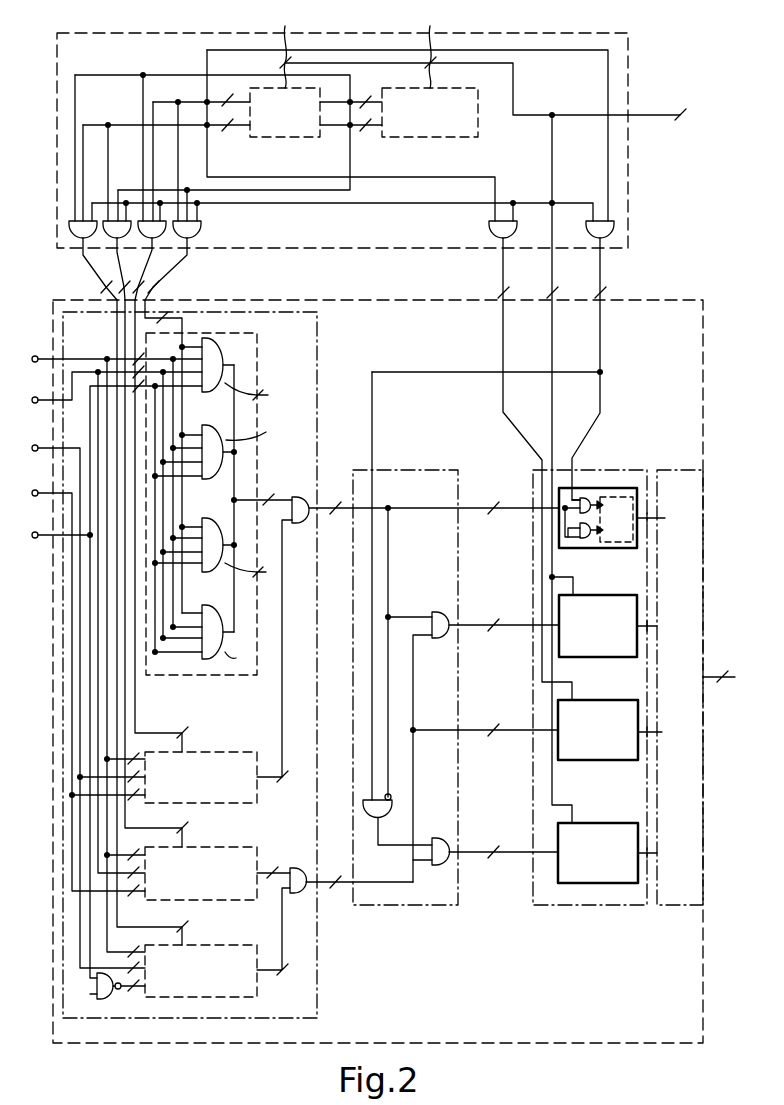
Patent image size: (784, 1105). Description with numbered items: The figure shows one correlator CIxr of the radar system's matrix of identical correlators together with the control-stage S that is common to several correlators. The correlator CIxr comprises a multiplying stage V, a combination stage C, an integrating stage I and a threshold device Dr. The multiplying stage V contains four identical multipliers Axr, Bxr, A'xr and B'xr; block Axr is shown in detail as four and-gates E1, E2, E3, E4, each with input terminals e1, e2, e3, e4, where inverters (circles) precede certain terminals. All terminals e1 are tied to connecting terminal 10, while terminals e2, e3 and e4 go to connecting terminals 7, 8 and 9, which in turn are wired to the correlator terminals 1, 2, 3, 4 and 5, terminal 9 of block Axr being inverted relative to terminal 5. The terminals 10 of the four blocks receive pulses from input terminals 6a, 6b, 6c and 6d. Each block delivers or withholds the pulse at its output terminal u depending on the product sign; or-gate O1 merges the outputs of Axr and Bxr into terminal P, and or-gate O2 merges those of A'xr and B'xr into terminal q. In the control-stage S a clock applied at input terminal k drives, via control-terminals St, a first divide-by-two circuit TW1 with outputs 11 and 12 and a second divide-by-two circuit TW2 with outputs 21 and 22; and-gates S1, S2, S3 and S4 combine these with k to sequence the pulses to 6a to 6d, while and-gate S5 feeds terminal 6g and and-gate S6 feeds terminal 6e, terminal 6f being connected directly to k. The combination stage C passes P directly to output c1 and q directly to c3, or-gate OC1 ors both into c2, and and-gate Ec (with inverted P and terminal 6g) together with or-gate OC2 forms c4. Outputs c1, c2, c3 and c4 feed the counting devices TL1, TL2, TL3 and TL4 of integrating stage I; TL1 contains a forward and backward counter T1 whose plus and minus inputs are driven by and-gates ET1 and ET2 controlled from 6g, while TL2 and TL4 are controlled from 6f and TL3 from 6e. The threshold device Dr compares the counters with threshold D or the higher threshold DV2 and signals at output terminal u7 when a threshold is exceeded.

The terminal 1 is at (35, 356).
The connecting terminal 2 is at (35, 397).
The connecting terminal 3 is at (35, 445).
The input terminal 4 is at (35, 490).
The input terminal 5 is at (35, 532).
The input terminal 6a is at (158, 288).
The input terminal 6b is at (142, 284).
The input terminal 6c is at (120, 284).
The input terminal 6d is at (101, 288).
The input terminal 6e is at (513, 292).
The input terminal 6f is at (558, 292).
The input terminal 6g is at (606, 292).
The connecting terminal 7 is at (135, 359).
The connecting terminal 8 is at (136, 968).
The connecting terminal 9 is at (116, 1000).
The connecting terminal 10 is at (170, 316).
The output terminal 11 is at (366, 131).
The output terminal 12 is at (366, 97).
The output terminal 21 is at (229, 131).
The output terminal 22 is at (229, 94).
The control-stage S is at (634, 50).
The and-gate S1 is at (202, 226).
The and-gate S2 is at (165, 240).
The and-gate S3 is at (122, 243).
The and-gate S4 is at (67, 243).
The and-gate S5 is at (614, 232).
The and-gate S6 is at (489, 230).
The control-terminal St is at (355, 45).
The input terminal k is at (681, 114).
The first synchronous divide-by-two circuit TW1 is at (450, 128).
The second synchronous divide-by-two circuit TW2 is at (305, 128).
The multiplying stage V is at (320, 372).
The multiplier Axr is at (217, 528).
The multiplier Bxr is at (233, 791).
The multiplier A'xr is at (201, 873).
The multiplier B'xr is at (201, 971).
The and-gate E1 is at (245, 375).
The and-gate E2 is at (245, 446).
The and-gate E3 is at (244, 547).
The and-gate E4 is at (228, 636).
The input terminal e1 is at (208, 342).
The input terminal e2 is at (245, 497).
The input terminal e3 is at (175, 537).
The input terminal e4 is at (243, 690).
The output terminal u is at (268, 497).
The or-gate O1 is at (296, 497).
The or-gate O2 is at (300, 893).
The output terminal P is at (335, 505).
The output terminal q is at (335, 889).
The combination stage C is at (438, 470).
The first or-gate OC1 is at (438, 612).
The second or-gate OC2 is at (438, 838).
The and-gate Ec is at (397, 819).
The output terminal c1 is at (500, 497).
The output terminal c2 is at (504, 611).
The output terminal c3 is at (485, 718).
The output terminal c4 is at (503, 837).
The integrating stage I is at (565, 470).
The threshold device Dr is at (677, 470).
The counting device TL1 is at (603, 496).
The counting device TL2 is at (612, 639).
The counting device TL3 is at (612, 744).
The counting device TL4 is at (612, 867).
The forward and backward counter T1 is at (616, 519).
The first and-gate ET1 is at (585, 497).
The second and-gate ET2 is at (588, 540).
The threshold value D is at (659, 625).
The threshold value DV2 is at (693, 612).
The correlator CIxr is at (678, 300).
The output terminal u7 is at (719, 694).